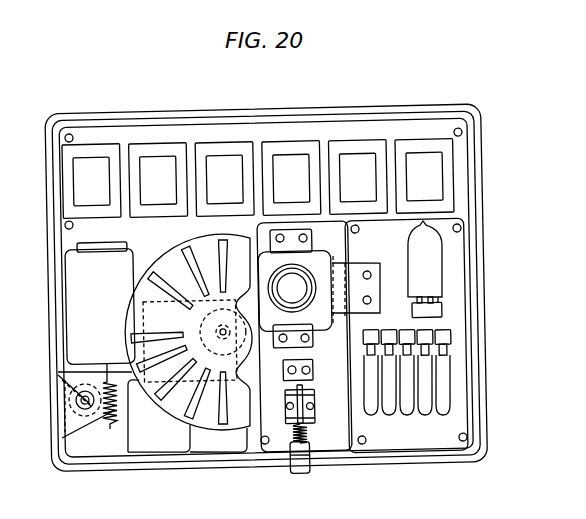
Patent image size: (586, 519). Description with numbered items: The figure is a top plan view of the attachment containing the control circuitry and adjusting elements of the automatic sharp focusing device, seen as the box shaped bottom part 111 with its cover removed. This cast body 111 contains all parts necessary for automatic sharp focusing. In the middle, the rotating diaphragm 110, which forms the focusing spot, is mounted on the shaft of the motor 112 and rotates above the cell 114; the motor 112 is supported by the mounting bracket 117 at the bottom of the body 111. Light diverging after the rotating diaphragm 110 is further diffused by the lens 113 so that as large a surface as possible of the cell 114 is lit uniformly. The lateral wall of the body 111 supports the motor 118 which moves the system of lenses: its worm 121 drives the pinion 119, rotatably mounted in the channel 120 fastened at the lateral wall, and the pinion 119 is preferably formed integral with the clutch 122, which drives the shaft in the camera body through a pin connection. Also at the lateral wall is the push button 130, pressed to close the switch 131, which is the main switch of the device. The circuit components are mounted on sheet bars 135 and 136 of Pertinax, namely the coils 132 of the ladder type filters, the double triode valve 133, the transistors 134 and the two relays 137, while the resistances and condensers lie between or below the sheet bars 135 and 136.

The rotating diaphragm 110 is at (234, 432).
The box shaped bottom part 111 is at (484, 163).
The motor 112 is at (245, 345).
The lens 113 is at (299, 284).
The cell 114 is at (326, 328).
The mounting bracket 117 is at (135, 280).
The motor 118 is at (73, 293).
The pinion 119 is at (54, 370).
The channel 120 is at (57, 433).
The worm 121 is at (107, 421).
The clutch 122 is at (68, 396).
The push button 130 is at (294, 464).
The switch 131 is at (302, 391).
The coils of the ladder type filters 132 is at (100, 161).
The double triode valve 133 is at (437, 266).
The transistors 134 is at (430, 402).
The sheet bar 135 is at (455, 317).
The sheet bar 136 is at (351, 442).
The relays 137 is at (188, 451).